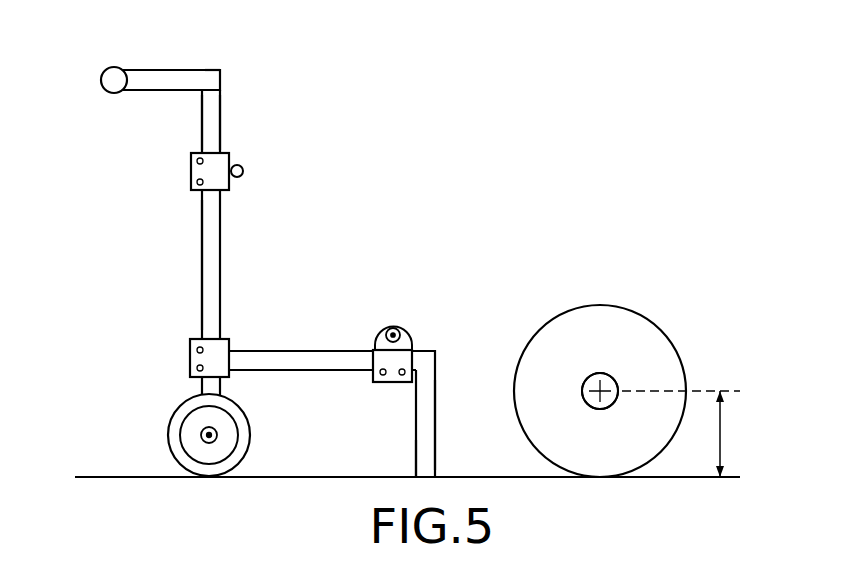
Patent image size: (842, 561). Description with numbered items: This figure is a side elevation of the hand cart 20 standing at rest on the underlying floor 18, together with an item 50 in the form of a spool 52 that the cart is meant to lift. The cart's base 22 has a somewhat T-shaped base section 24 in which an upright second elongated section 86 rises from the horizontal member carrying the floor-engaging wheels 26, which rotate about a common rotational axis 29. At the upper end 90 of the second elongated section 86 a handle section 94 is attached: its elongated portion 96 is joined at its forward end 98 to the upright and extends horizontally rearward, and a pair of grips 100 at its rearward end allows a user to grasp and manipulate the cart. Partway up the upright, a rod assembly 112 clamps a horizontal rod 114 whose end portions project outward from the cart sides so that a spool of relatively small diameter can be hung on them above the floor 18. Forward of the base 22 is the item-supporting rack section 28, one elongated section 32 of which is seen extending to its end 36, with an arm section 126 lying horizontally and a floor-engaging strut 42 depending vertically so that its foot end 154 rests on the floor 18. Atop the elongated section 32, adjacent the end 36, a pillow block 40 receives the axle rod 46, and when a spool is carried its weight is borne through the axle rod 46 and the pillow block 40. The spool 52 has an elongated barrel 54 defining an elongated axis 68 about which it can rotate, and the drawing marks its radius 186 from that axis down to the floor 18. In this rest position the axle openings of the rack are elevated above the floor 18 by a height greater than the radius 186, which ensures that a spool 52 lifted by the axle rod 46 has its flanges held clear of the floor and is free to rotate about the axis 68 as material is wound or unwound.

The floor 18 is at (510, 477).
The hand cart 20 is at (88, 60).
The base 22 is at (201, 318).
The base section 24 is at (222, 273).
The floor-engaging wheels 26 is at (168, 430).
The rack section 28 is at (335, 371).
The common rotational axis 29 is at (217, 434).
The elongated section 32 is at (357, 350).
The end 36 is at (437, 350).
The pillow block 40 is at (395, 325).
The floor-engaging strut 42 is at (435, 400).
The axle rod 46 is at (398, 330).
The item 50 is at (642, 278).
The spool 52 is at (653, 320).
The barrel 54 is at (613, 379).
The elongated axis 68 is at (590, 383).
The second elongated section 86 is at (222, 115).
The upper end 90 is at (201, 113).
The handle section 94 is at (129, 70).
The elongated portion 96 is at (183, 70).
The end 98 is at (213, 70).
The grips 100 is at (110, 92).
The rod assembly 112 is at (245, 168).
The rod 114 is at (242, 178).
The arm section 126 is at (310, 371).
The foot end 154 is at (416, 473).
The radius 186 is at (722, 428).